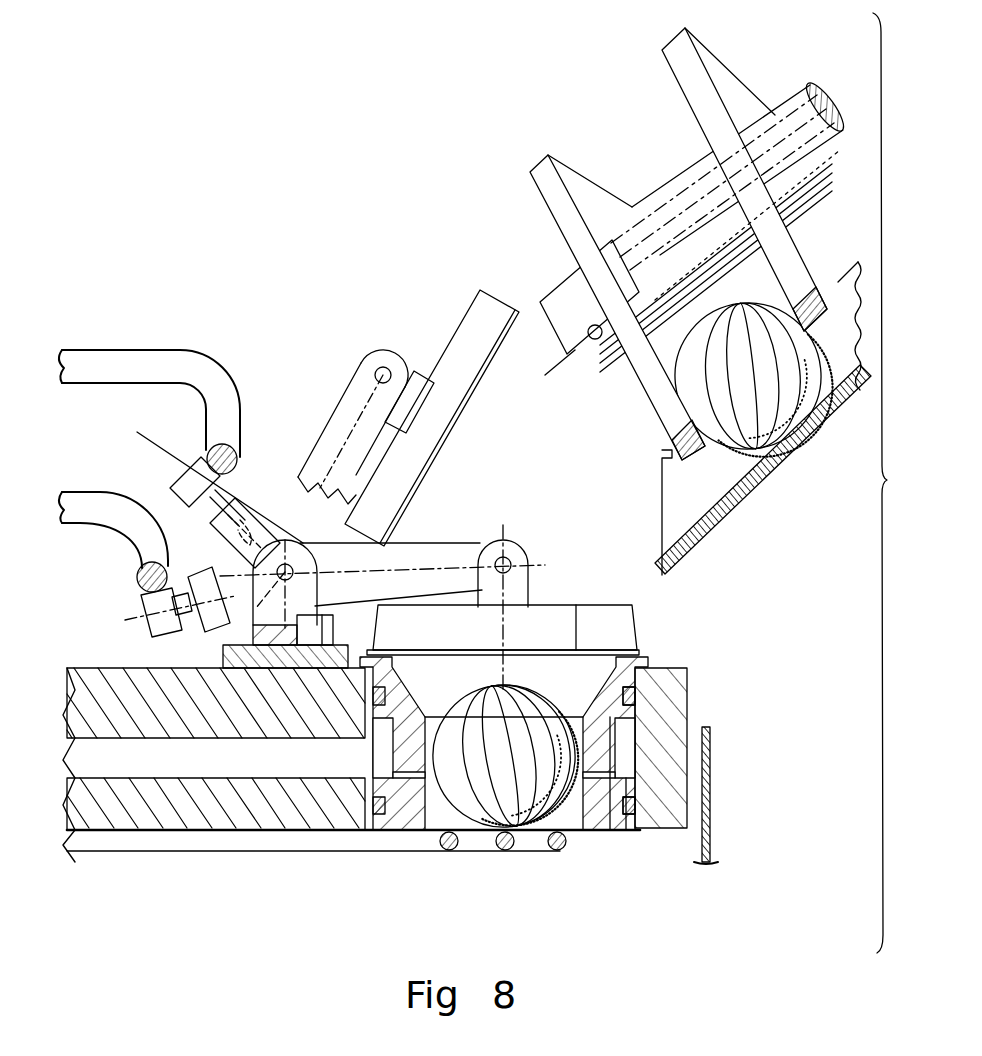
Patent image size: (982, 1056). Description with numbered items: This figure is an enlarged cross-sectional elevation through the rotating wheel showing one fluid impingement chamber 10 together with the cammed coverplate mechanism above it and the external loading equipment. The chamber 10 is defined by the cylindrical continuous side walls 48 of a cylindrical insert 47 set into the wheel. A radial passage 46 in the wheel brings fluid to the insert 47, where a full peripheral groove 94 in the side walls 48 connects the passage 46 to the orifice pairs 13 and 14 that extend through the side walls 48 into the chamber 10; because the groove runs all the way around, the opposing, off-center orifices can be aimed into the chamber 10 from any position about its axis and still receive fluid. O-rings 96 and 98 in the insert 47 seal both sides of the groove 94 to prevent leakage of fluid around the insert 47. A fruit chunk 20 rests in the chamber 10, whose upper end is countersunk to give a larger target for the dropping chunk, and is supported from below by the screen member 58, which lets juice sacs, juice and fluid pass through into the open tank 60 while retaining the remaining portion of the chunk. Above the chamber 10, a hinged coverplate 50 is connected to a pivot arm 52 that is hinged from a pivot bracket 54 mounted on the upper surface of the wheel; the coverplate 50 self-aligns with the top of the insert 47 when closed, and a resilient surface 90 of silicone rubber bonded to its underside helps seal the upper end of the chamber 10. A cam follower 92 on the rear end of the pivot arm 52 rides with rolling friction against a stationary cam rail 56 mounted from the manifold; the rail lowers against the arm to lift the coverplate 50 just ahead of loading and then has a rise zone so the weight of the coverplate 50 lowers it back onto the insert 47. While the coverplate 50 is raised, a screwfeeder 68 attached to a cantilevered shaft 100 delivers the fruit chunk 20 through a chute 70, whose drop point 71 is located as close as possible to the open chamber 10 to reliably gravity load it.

The fluid impingement chamber 10 is at (440, 810).
The orifice pair 13 is at (600, 832).
The orifice pair 14 is at (410, 830).
The fruit chunk 20 is at (480, 828).
The radial passage 46 is at (318, 750).
The cylindrical insert 47 is at (630, 830).
The side walls 48 is at (640, 655).
The coverplate 50 is at (614, 613).
The pivot arm 52 is at (450, 545).
The pivot bracket 54 is at (302, 568).
The cam rail 56 is at (237, 461).
The screen member 58 is at (555, 850).
The open tank 60 is at (712, 845).
The screwfeeder 68 is at (548, 190).
The chute 70 is at (742, 487).
The drop point 71 is at (672, 540).
The resilient surface 90 is at (576, 650).
The cam follower 92 is at (182, 484).
The peripheral groove 94 is at (623, 755).
The O-ring 96 is at (636, 810).
The O-ring 98 is at (636, 697).
The shaft 100 is at (795, 128).